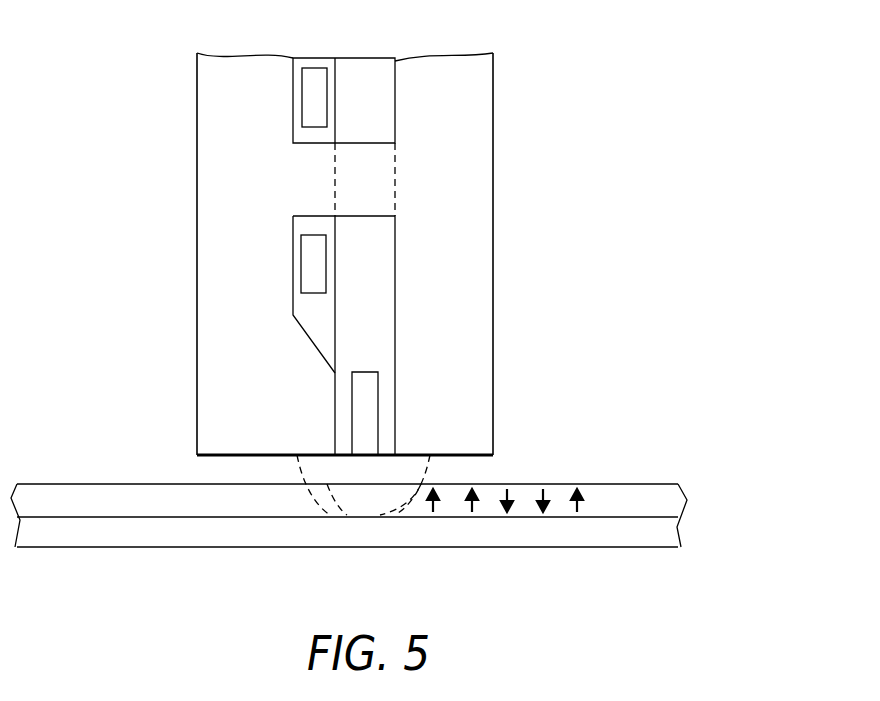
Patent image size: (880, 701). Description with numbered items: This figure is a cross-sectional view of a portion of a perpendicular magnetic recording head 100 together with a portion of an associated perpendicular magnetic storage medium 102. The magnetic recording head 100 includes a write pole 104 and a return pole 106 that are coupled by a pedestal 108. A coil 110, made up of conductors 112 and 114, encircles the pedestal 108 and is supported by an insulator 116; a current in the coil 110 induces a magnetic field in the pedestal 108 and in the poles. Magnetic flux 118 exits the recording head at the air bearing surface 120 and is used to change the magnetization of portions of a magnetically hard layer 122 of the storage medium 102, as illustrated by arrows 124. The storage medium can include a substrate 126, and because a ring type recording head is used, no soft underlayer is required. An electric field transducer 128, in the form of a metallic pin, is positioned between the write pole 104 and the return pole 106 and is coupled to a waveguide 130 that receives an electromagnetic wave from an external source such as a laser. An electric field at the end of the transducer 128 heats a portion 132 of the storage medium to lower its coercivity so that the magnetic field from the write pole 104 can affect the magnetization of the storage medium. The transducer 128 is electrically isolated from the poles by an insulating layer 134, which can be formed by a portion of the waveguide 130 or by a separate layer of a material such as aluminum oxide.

The magnetic recording head 100 is at (583, 188).
The perpendicular magnetic storage medium 102 is at (393, 503).
The write pole 104 is at (470, 388).
The return pole 106 is at (210, 365).
The pedestal 108 is at (370, 180).
The coil 110 is at (343, 75).
The conductor 112 is at (312, 108).
The conductor 114 is at (310, 260).
The insulator 116 is at (310, 62).
The magnetic flux 118 is at (428, 468).
The air bearing surface 120 is at (477, 458).
The magnetically hard layer 122 is at (627, 498).
The arrows 124 is at (472, 503).
The substrate 126 is at (627, 538).
The electric field transducer 128 is at (358, 415).
The waveguide 130 is at (377, 297).
The heated portion of the storage medium 132 is at (362, 500).
The insulating layer 134 is at (387, 400).